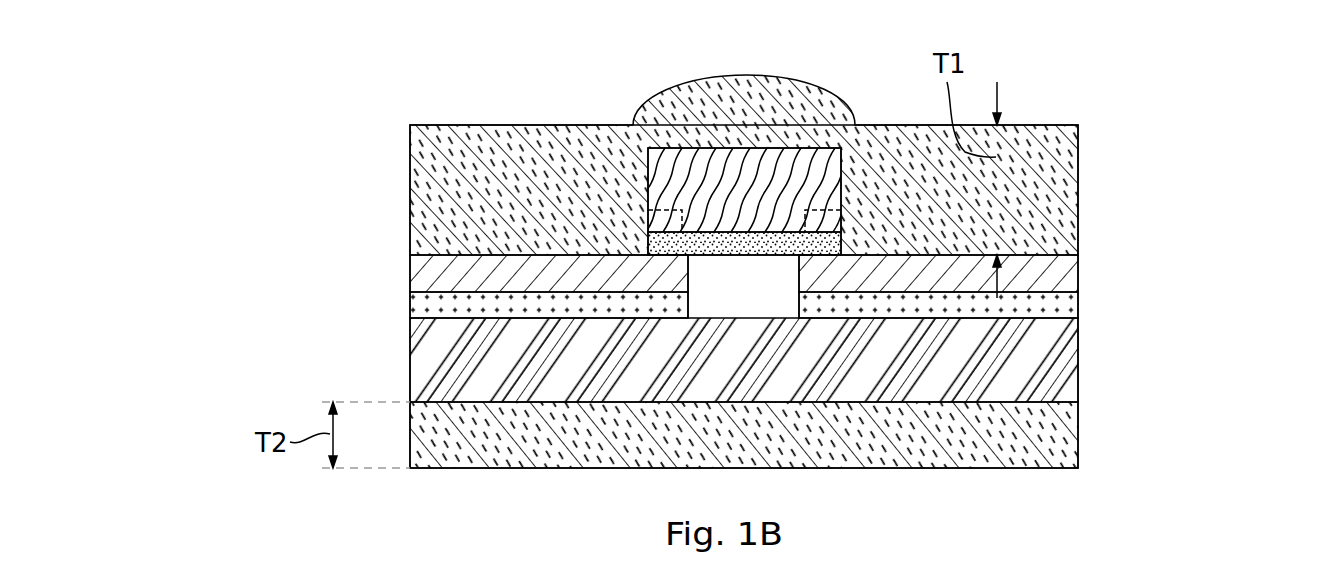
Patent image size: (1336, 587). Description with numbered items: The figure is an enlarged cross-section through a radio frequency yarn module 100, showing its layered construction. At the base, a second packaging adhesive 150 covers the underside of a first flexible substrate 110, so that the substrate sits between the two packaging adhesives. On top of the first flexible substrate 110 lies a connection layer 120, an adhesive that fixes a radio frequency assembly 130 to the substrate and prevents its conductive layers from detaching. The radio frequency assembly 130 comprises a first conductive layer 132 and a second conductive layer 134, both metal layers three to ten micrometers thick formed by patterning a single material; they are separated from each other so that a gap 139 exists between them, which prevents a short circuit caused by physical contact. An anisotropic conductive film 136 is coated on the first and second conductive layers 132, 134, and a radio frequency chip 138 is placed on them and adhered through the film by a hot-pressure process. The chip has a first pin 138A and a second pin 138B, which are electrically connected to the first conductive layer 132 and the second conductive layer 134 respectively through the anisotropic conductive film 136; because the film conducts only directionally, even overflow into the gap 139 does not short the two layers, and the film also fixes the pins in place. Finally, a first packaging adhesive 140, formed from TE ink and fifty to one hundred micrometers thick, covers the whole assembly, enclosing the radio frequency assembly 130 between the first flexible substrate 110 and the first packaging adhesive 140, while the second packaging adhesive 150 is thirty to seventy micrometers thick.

The radio frequency yarn module 100 is at (372, 41).
The first flexible substrate 110 is at (1065, 354).
The connection layer 120 is at (1062, 303).
The radio frequency assembly 130 is at (1190, 142).
The first conductive layer 132 is at (677, 275).
The second conductive layer 134 is at (1058, 272).
The anisotropic conductive film 136 is at (660, 243).
The radio frequency chip 138 is at (827, 172).
The first pin 138A is at (838, 214).
The second pin 138B is at (648, 202).
The gap 139 is at (712, 306).
The first packaging adhesive 140 is at (1053, 140).
The second packaging adhesive 150 is at (1065, 433).